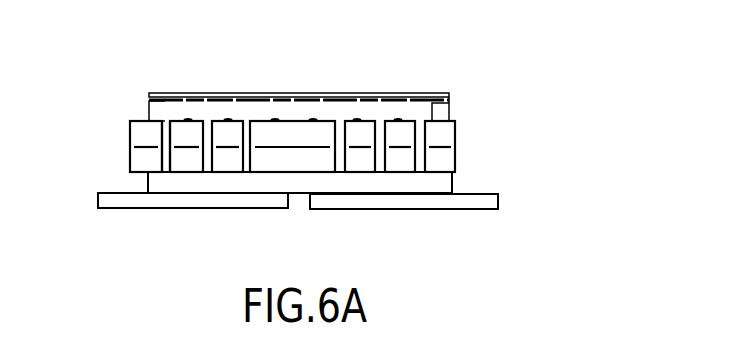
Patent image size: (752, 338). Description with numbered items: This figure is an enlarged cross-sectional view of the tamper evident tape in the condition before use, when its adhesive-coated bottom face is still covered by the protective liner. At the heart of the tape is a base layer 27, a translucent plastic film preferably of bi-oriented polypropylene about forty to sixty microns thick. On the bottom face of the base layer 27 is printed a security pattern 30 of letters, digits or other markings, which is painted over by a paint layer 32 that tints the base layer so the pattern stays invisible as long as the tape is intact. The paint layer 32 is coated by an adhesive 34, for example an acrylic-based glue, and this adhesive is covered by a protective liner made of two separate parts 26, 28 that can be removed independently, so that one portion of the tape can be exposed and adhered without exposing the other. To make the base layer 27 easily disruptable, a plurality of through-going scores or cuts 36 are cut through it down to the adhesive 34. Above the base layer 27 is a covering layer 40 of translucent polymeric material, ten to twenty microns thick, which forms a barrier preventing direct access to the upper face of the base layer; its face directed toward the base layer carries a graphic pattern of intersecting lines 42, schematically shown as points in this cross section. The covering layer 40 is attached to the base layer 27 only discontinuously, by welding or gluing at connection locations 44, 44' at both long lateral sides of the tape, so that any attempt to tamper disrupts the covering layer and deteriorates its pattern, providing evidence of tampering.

The protective liner part 26 is at (478, 210).
The base layer 27 is at (447, 140).
The protective liner part 28 is at (157, 209).
The security pattern 30 is at (313, 147).
The paint layer 32 is at (448, 157).
The adhesive 34 is at (445, 183).
The scores or cuts 36 is at (165, 126).
The covering layer 40 is at (397, 93).
The intersecting lines 42 is at (224, 121).
The connection location 44 is at (93, 97).
The connection location 44' is at (509, 77).